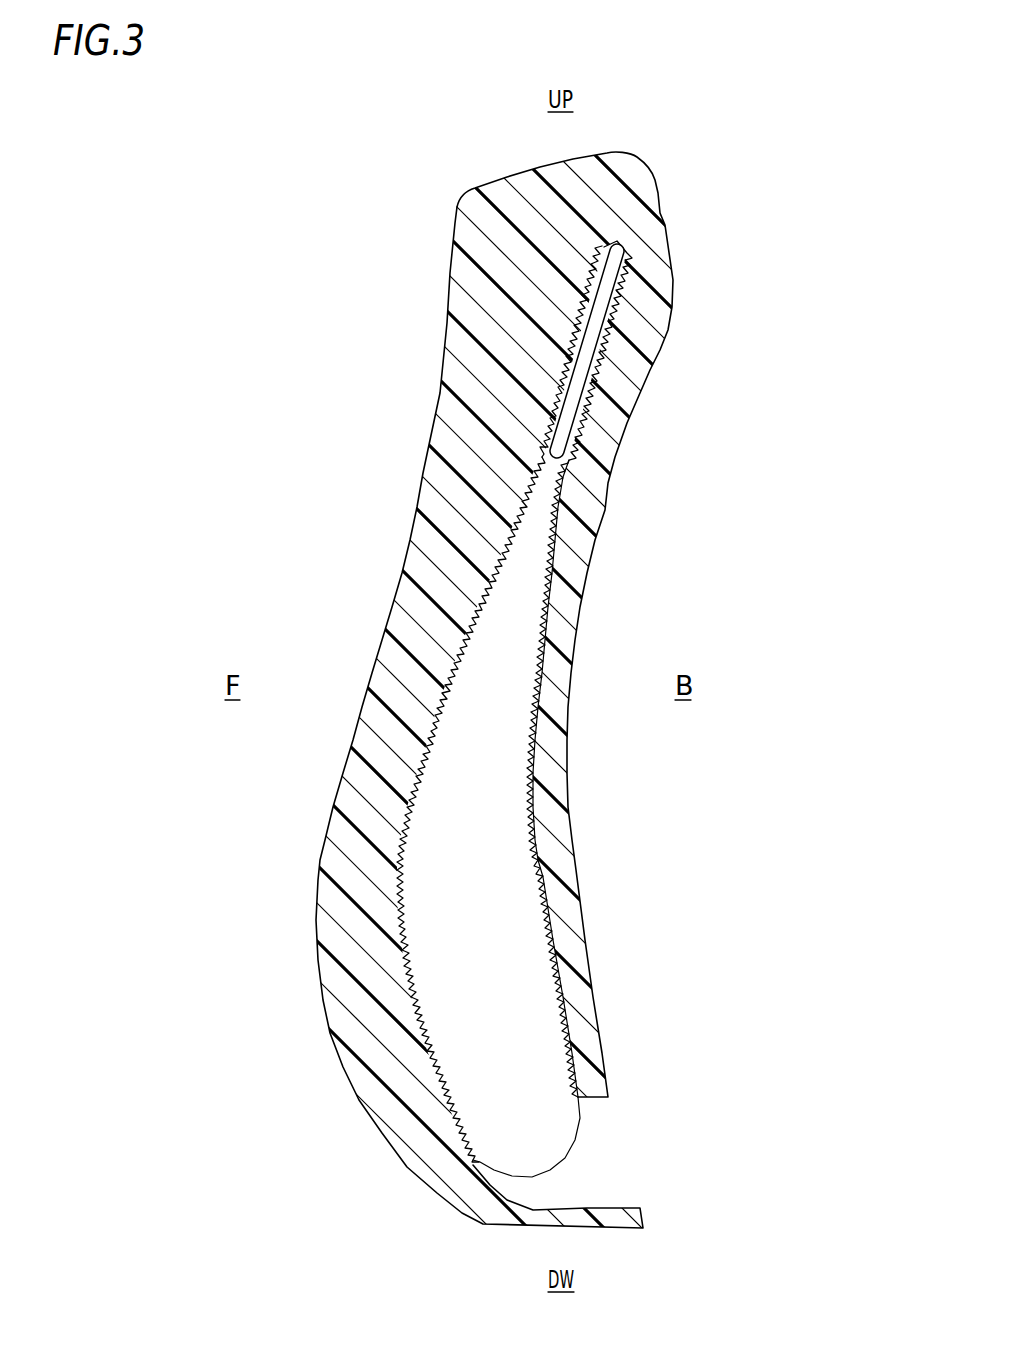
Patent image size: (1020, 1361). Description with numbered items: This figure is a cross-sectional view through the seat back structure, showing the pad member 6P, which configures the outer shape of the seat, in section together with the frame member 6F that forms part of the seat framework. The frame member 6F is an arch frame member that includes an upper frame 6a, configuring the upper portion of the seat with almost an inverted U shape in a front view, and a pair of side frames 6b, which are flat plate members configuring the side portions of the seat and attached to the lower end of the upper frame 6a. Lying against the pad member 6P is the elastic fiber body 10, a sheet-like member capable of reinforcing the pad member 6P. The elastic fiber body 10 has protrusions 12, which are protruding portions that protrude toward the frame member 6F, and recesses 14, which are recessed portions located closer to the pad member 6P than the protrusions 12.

The pad member 6P is at (623, 213).
The frame member 6F is at (589, 701).
The upper frame 6a is at (590, 368).
The side frame 6b is at (490, 875).
The elastic fiber body 10 is at (567, 388).
The protrusion 12 is at (462, 351).
The recess 14 is at (439, 351).